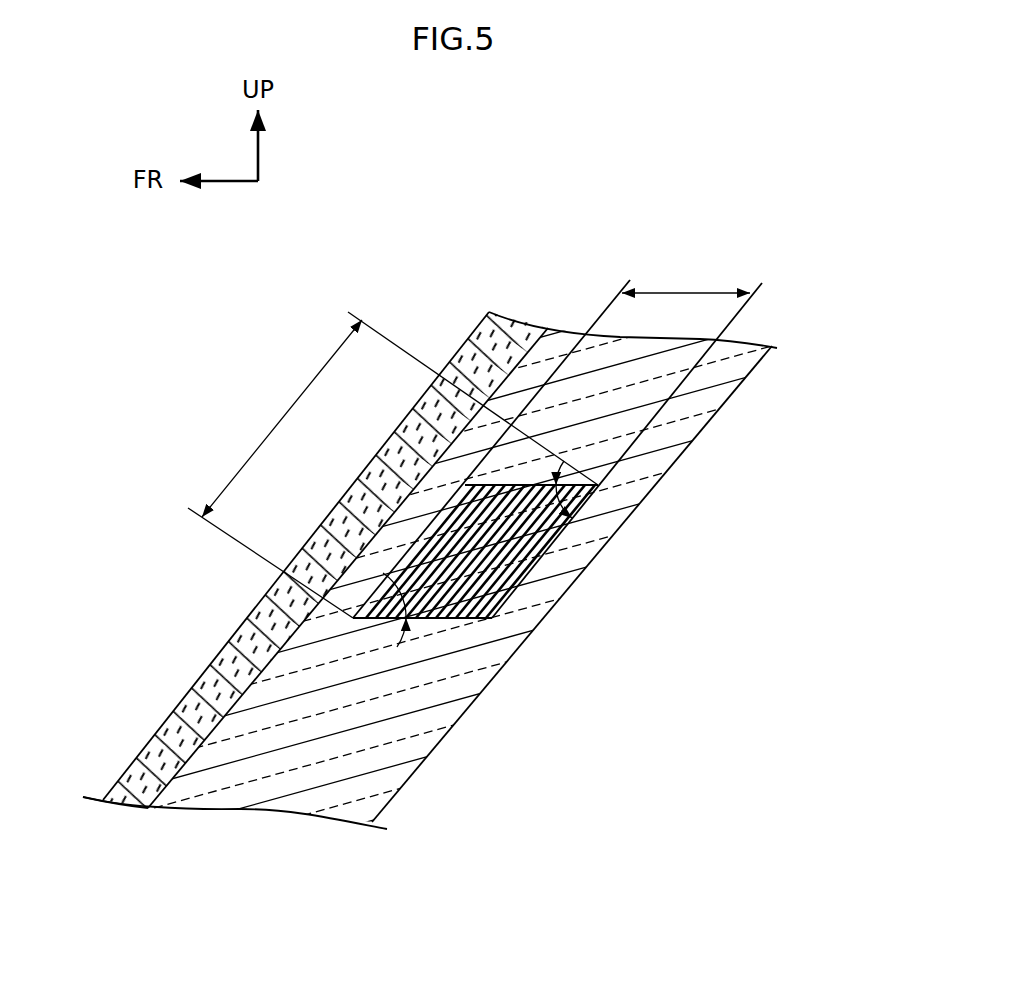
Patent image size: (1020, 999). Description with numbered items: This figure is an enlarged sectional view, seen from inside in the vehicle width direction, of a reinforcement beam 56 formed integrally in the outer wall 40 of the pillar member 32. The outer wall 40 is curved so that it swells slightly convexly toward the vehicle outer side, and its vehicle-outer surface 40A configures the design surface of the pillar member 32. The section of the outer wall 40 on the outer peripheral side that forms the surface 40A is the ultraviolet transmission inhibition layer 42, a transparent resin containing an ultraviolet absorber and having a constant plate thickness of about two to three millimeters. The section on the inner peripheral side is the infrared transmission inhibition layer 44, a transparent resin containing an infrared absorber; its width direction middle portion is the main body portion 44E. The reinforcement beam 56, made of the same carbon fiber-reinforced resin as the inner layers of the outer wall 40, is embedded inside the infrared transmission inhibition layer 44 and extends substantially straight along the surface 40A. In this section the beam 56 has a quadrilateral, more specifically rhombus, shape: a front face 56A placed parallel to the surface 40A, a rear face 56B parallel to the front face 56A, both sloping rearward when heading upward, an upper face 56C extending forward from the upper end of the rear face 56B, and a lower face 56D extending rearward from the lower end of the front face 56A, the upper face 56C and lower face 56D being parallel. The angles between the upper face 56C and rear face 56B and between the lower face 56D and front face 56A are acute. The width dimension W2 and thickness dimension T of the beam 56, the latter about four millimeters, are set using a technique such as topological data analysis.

The outer wall 40 is at (325, 529).
The pillar member 32 is at (482, 334).
The surface 40A is at (191, 694).
The ultraviolet transmission inhibition layer 42 is at (142, 812).
The infrared transmission inhibition layer 44 is at (374, 830).
The main body portion 44E is at (403, 763).
The reinforcement beam 56 is at (545, 509).
The front face 56A is at (445, 517).
The rear face 56B is at (532, 572).
The upper face 56C is at (513, 485).
The lower face 56D is at (437, 619).
The width dimension W2 is at (283, 414).
The thickness dimension T is at (688, 293).